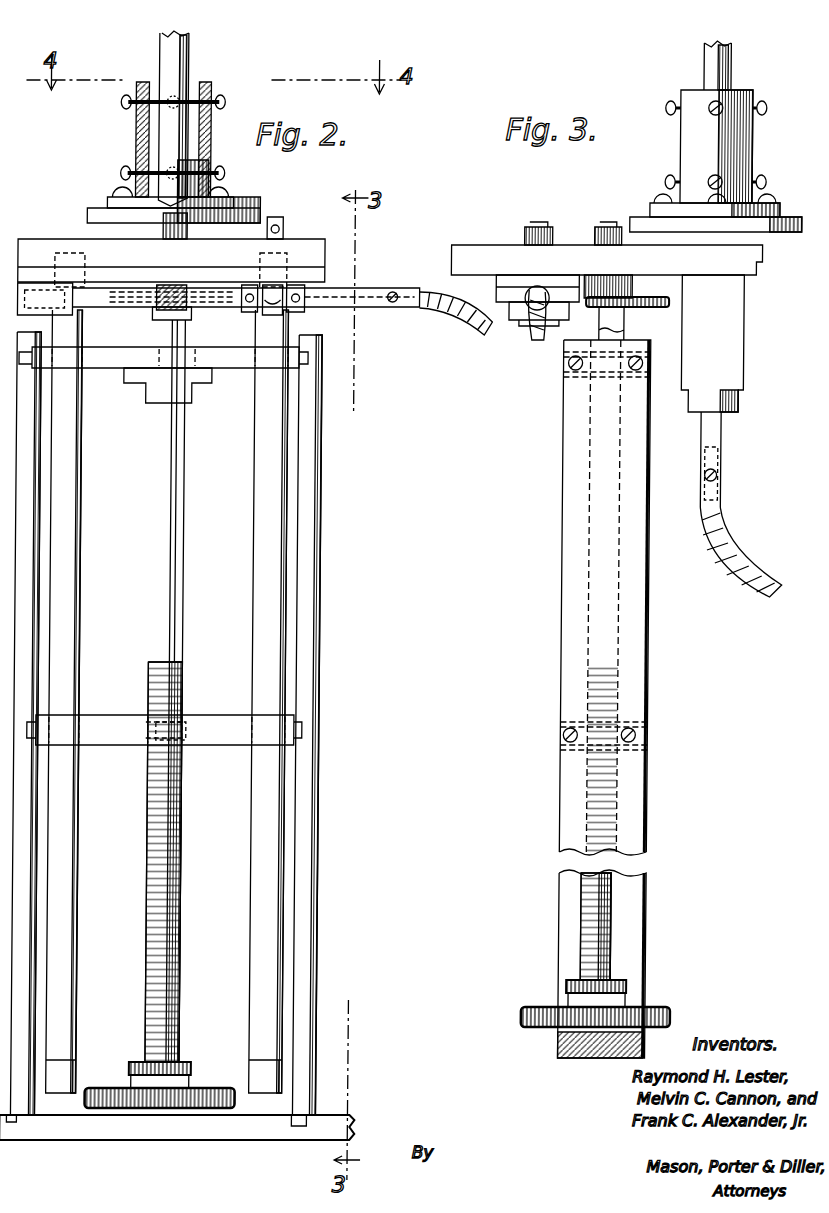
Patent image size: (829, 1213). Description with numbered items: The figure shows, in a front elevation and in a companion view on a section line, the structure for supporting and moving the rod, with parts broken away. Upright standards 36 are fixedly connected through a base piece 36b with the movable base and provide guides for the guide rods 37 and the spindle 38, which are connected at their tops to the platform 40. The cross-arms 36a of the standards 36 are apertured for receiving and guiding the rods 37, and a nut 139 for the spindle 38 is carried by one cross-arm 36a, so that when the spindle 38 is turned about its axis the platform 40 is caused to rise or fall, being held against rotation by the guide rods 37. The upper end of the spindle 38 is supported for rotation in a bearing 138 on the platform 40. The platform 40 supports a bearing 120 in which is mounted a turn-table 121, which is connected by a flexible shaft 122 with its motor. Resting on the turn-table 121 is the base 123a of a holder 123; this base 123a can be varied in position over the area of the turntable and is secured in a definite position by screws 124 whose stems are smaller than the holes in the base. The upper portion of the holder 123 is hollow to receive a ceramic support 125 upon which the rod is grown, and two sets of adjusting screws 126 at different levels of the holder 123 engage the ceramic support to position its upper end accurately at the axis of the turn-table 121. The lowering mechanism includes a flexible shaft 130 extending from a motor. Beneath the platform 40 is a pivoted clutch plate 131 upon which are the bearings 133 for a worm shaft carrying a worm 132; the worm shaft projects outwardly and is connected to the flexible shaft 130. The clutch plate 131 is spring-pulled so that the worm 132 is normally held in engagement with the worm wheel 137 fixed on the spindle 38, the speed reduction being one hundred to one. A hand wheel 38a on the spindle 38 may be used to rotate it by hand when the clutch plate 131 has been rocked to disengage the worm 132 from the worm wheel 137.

In FIG. 2, the standards 36 is at (30, 512).
In FIG. 3, the standards 36 is at (565, 605).
In FIG. 2, the cross-arms 36a is at (103, 357).
In FIG. 3, the cross-arms 36a is at (578, 372).
In FIG. 2, the base piece 36b is at (195, 1125).
In FIG. 3, the base piece 36b is at (652, 1042).
In FIG. 2, the rods 37 is at (280, 565).
In FIG. 2, the spindle 38 is at (180, 605).
In FIG. 3, the spindle 38 is at (612, 325).
In FIG. 2, the hand wheel 38a is at (200, 1090).
In FIG. 3, the hand wheel 38a is at (535, 1012).
In FIG. 2, the platform 40 is at (320, 238).
In FIG. 3, the platform 40 is at (485, 236).
In FIG. 2, the bearing 120 is at (132, 378).
In FIG. 3, the bearing 120 is at (740, 338).
In FIG. 2, the turn-table 121 is at (95, 210).
In FIG. 3, the turn-table 121 is at (770, 233).
In FIG. 3, the flexible shaft 122 is at (775, 562).
In FIG. 2, the holder 123 is at (135, 120).
In FIG. 3, the holder 123 is at (698, 148).
In FIG. 2, the base 123a is at (118, 197).
In FIG. 3, the base 123a is at (655, 207).
In FIG. 2, the screws 124 is at (225, 196).
In FIG. 3, the screws 124 is at (663, 198).
In FIG. 2, the ceramic support 125 is at (168, 50).
In FIG. 3, the ceramic support 125 is at (725, 63).
In FIG. 2, the adjusting screws 126 is at (192, 95).
In FIG. 3, the adjusting screws 126 is at (790, 85).
In FIG. 2, the flexible shaft 130 is at (455, 318).
In FIG. 3, the flexible shaft 130 is at (538, 345).
In FIG. 2, the clutch plate 131 is at (325, 273).
In FIG. 3, the clutch plate 131 is at (530, 270).
In FIG. 2, the worm 132 is at (180, 292).
In FIG. 2, the bearings 133 is at (42, 283).
In FIG. 3, the bearings 133 is at (515, 300).
In FIG. 2, the worm wheel 137 is at (135, 280).
In FIG. 3, the worm wheel 137 is at (672, 302).
In FIG. 2, the bearing 138 is at (190, 320).
In FIG. 3, the bearing 138 is at (635, 287).
In FIG. 2, the nut 139 is at (195, 714).